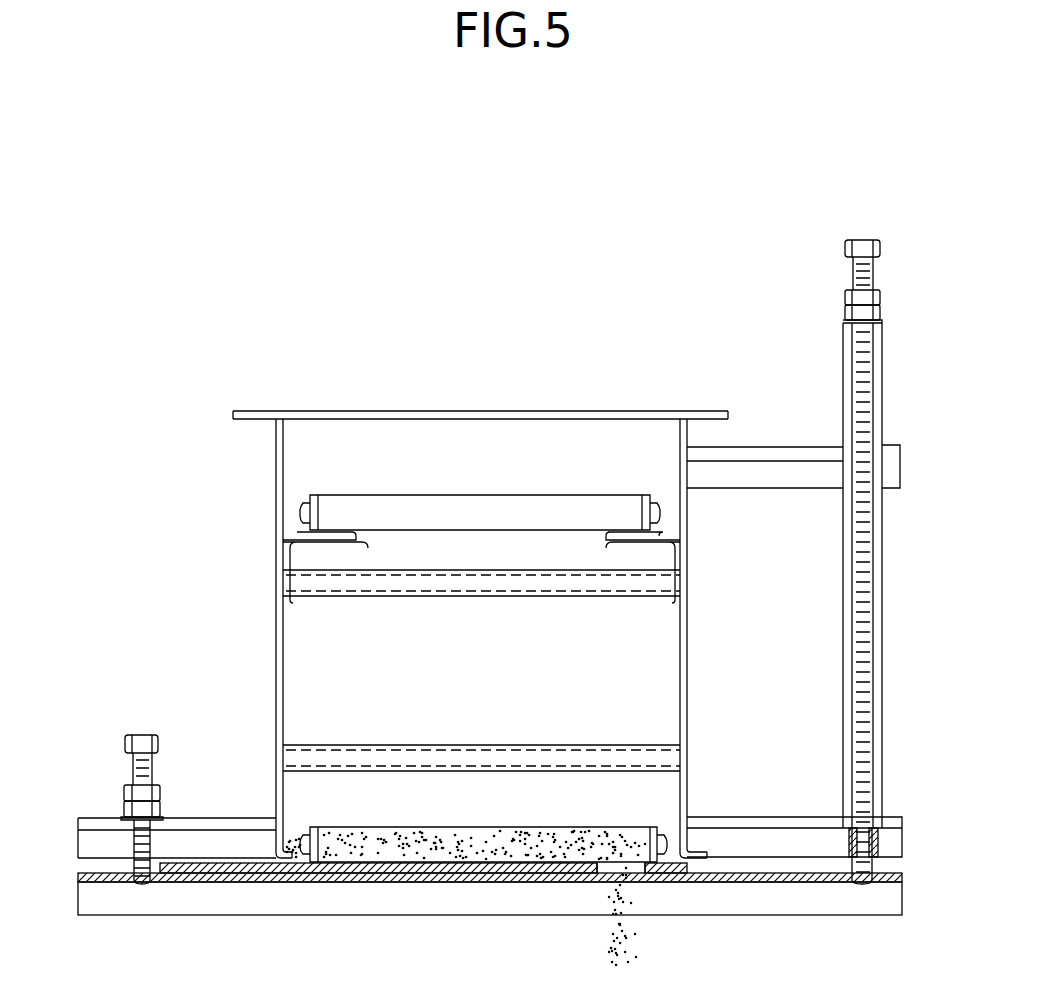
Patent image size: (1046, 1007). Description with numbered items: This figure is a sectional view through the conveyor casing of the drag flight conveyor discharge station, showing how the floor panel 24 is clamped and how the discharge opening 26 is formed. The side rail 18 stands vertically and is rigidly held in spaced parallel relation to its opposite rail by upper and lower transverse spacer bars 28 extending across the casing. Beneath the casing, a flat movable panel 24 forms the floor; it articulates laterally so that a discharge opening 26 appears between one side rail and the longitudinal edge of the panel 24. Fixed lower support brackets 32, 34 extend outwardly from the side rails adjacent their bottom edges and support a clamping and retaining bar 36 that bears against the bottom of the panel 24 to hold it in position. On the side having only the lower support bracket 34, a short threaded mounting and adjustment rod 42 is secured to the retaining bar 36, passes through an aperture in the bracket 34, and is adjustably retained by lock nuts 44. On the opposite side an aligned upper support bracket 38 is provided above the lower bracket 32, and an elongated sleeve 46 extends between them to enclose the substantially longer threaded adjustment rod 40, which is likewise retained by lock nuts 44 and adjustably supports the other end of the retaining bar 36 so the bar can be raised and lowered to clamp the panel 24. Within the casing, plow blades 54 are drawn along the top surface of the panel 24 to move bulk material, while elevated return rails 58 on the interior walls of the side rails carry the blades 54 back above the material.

The side rail 18 is at (687, 645).
The movable panel 24 is at (233, 873).
The discharge opening 26 is at (645, 868).
The transverse spacer bar 28 is at (498, 597).
The lower support bracket 32 is at (752, 817).
The lower support bracket 34 is at (215, 818).
The clamping and retaining bar 36 is at (345, 915).
The upper support bracket 38 is at (800, 447).
The elongated adjustment rod 40 is at (853, 272).
The short threaded mounting and adjustment rod 42 is at (153, 762).
The lock nut 44 is at (845, 292).
The elongated sleeve 46 is at (842, 560).
The plow blade 54 is at (498, 494).
The return rail 58 is at (330, 545).